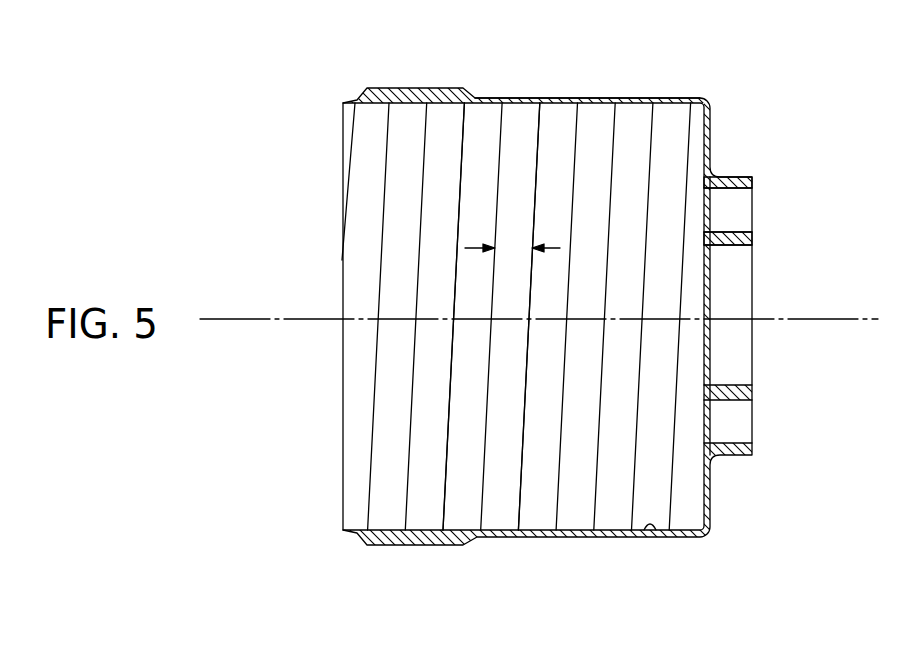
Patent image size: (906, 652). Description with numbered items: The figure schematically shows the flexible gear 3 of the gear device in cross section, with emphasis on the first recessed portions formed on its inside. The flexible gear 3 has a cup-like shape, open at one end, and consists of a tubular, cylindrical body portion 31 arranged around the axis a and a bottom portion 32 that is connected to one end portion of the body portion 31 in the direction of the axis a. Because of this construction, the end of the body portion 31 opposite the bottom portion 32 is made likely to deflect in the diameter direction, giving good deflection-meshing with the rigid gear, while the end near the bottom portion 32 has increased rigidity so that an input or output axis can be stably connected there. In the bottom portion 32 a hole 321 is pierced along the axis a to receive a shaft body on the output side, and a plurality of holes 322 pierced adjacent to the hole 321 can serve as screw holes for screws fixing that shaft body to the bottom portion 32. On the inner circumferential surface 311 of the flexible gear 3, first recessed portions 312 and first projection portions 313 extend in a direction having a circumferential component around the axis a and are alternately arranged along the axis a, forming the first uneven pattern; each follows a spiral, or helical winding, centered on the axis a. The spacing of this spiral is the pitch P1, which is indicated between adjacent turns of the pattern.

The flexible gear 3 is at (648, 97).
The body portion 31 is at (582, 540).
The inner circumferential surface 311 is at (654, 531).
The first recessed portions 312 is at (445, 503).
The first projection portions 313 is at (522, 112).
The bottom portion 32 is at (713, 128).
The hole 321 is at (733, 245).
The holes 322 is at (733, 188).
The axis a is at (829, 321).
The pitch P1 is at (512, 236).